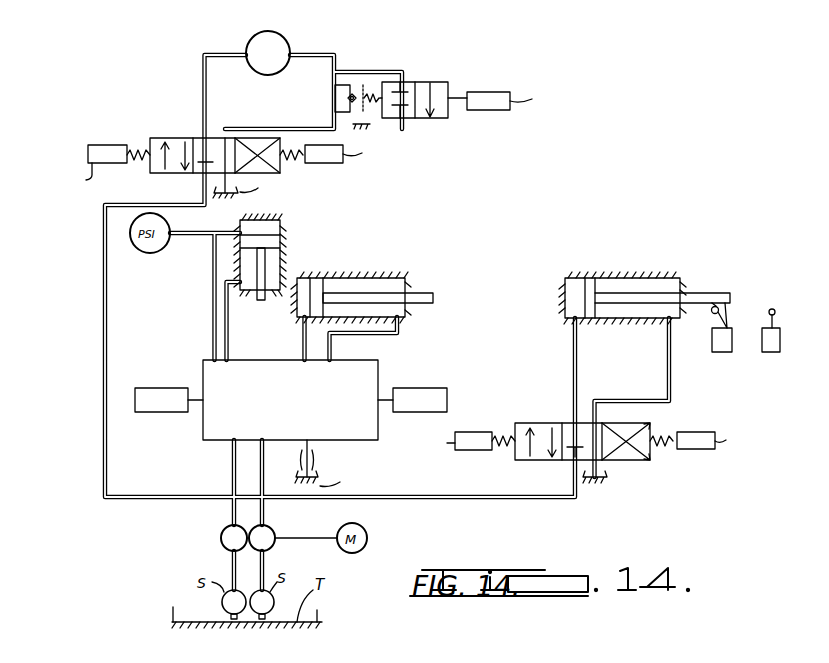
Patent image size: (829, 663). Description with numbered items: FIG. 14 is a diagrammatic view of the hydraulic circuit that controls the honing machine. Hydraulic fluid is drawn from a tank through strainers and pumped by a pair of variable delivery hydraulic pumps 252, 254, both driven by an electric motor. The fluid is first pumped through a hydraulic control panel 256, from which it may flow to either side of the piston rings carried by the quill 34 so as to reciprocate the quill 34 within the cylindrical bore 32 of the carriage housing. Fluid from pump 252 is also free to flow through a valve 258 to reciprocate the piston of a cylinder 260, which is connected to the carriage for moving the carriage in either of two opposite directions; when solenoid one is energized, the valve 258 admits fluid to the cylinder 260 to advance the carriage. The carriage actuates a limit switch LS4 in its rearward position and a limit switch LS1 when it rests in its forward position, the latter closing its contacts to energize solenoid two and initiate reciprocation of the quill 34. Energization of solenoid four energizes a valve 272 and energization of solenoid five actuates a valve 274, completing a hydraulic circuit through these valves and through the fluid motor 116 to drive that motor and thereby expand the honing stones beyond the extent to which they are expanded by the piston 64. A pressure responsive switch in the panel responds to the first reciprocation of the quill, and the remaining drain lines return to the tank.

The fluid motor 116 is at (279, 40).
The valve 274 is at (178, 124).
The valve 272 is at (428, 85).
The piston 64 is at (277, 243).
The quill 34 is at (315, 278).
The cylindrical bore 32 is at (362, 281).
The hydraulic control panel 256 is at (326, 428).
The cylinder 260 is at (671, 313).
The valve 258 is at (644, 460).
The variable delivery hydraulic pump 254 is at (221, 532).
The variable delivery hydraulic pump 252 is at (274, 526).
The limit switch LS4 is at (716, 352).
The limit switch LS1 is at (770, 352).